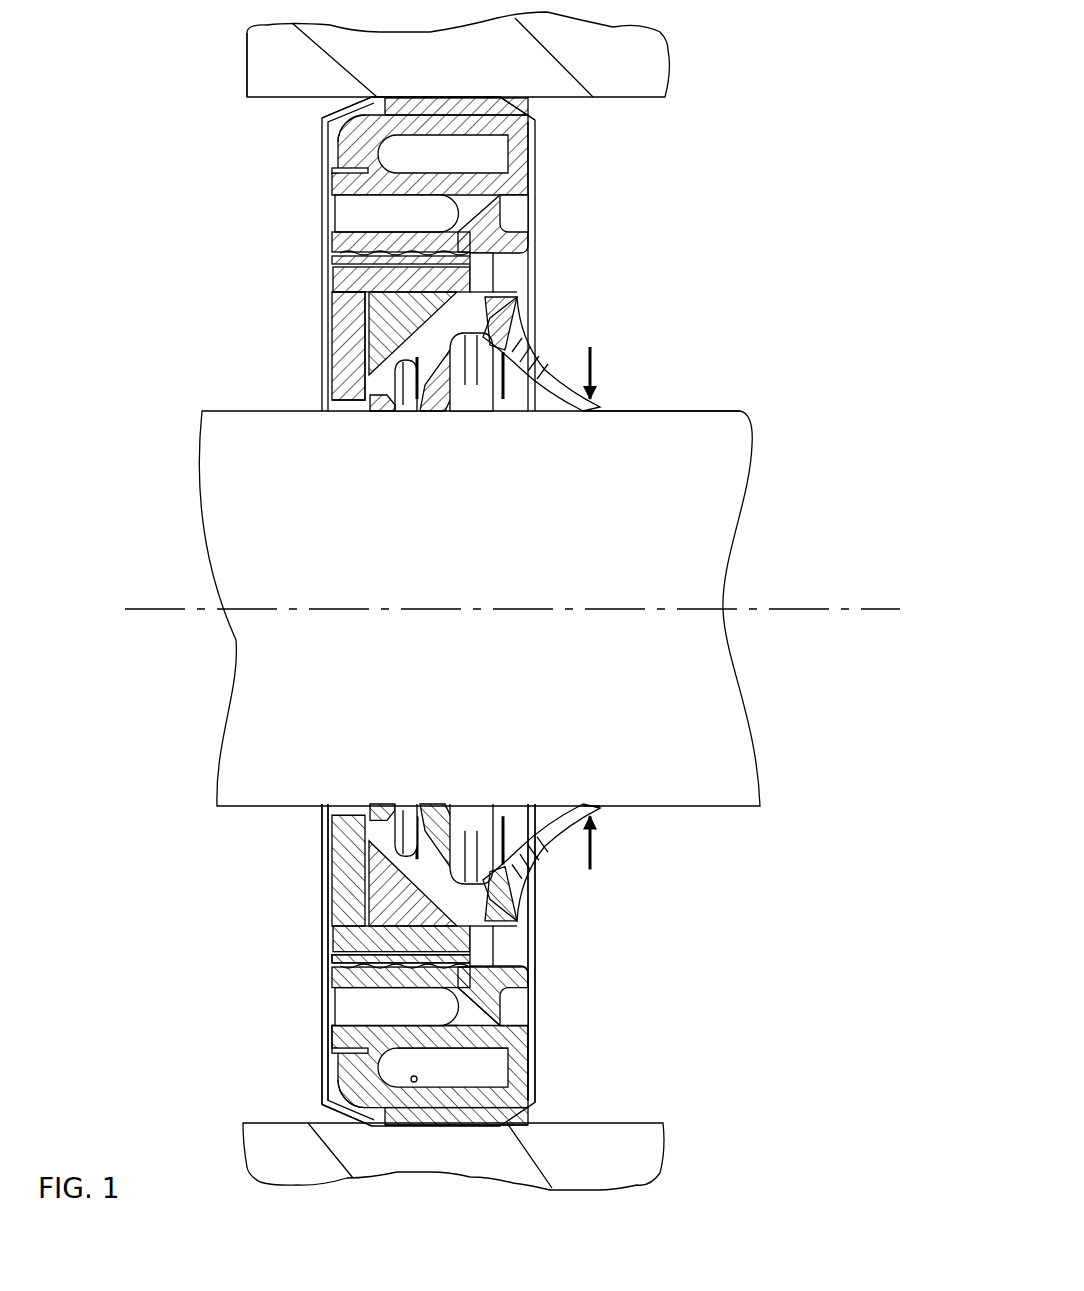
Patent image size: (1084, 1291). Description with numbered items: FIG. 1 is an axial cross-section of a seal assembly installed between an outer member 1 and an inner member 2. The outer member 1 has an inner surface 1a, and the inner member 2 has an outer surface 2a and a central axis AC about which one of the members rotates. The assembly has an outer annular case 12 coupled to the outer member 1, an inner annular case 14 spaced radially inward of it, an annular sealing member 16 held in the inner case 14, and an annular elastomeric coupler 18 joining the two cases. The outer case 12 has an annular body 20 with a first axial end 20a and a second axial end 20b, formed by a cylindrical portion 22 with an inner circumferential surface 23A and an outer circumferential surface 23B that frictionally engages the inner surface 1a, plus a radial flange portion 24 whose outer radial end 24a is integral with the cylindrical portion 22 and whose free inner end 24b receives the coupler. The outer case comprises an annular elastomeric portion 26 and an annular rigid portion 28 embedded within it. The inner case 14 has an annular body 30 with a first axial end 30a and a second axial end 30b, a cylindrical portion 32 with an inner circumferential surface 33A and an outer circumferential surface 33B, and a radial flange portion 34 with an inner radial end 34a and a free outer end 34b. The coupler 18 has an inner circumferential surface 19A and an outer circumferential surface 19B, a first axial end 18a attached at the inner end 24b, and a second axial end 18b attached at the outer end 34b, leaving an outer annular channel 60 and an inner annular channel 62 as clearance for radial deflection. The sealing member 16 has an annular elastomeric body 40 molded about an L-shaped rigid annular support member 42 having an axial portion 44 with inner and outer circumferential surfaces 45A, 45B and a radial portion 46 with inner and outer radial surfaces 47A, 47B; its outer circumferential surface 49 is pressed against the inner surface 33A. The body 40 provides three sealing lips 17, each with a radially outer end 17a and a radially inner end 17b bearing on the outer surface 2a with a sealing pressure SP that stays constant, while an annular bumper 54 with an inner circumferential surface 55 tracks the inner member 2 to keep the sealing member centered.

The outer member 1 is at (250, 72).
The inner surface 1a is at (640, 98).
The inner member 2 is at (735, 450).
The outer surface 2a is at (722, 411).
The central axis AC is at (812, 609).
The outer annular case 12 is at (278, 151).
The inner annular case 14 is at (546, 226).
The annular sealing member 16 is at (578, 340).
The sealing lips 17 is at (400, 419).
The radially outer end 17a is at (522, 876).
The radially inner end 17b is at (586, 806).
The annular elastomeric coupler 18 is at (527, 171).
The first axial end 18a is at (366, 215).
The second axial end 18b is at (500, 172).
The outer annular channel 60 is at (447, 148).
The inner annular channel 62 is at (330, 207).
The outer circumferential surface 49 is at (400, 251).
The outer circumferential surface 45B is at (332, 257).
The inner circumferential surface 45A is at (388, 295).
The axial portion 44 is at (440, 296).
The rigid annular support member 42 is at (322, 301).
The radial portion 46 is at (340, 342).
The annular elastomeric body 40 is at (530, 308).
The annular bumper 54 is at (330, 403).
The inner circumferential surface 55 is at (363, 420).
The annular body 20 is at (450, 1131).
The first axial end 20a is at (325, 1075).
The second axial end 20b is at (540, 1090).
The cylindrical portion 22 is at (485, 1118).
The inner circumferential surface 23A is at (413, 1082).
The outer circumferential surface 23B is at (382, 1124).
The radial flange portion 24 is at (320, 1057).
The outer radial end 24a is at (357, 1113).
The free inner end 24b is at (335, 1027).
The annular elastomeric portion 26 is at (357, 1112).
The annular rigid portion 28 is at (528, 1088).
The annular body 30 is at (510, 959).
The first axial end 30a is at (330, 968).
The second axial end 30b is at (527, 1010).
The cylindrical portion 32 is at (346, 958).
The inner circumferential surface 33A is at (423, 946).
The outer circumferential surface 33B is at (372, 997).
The radial flange portion 34 is at (533, 986).
The inner radial end 34a is at (522, 998).
The free outer end 34b is at (520, 1040).
The inner circumferential surface 19A is at (375, 1012).
The outer circumferential surface 19B is at (465, 1068).
The inner radial surface 47A is at (372, 880).
The outer radial surface 47B is at (335, 860).
The sealing pressure SP is at (499, 857).